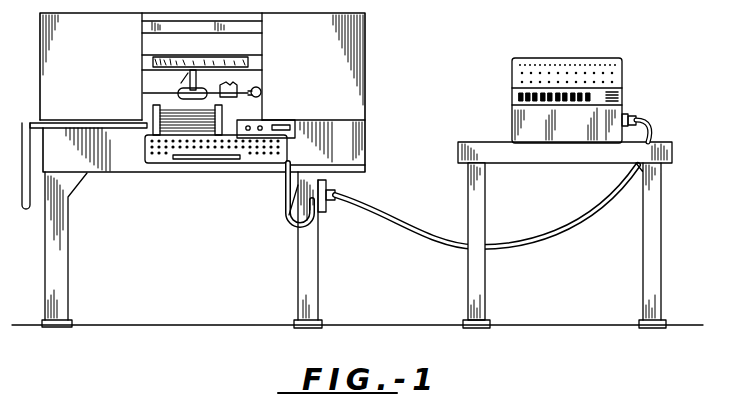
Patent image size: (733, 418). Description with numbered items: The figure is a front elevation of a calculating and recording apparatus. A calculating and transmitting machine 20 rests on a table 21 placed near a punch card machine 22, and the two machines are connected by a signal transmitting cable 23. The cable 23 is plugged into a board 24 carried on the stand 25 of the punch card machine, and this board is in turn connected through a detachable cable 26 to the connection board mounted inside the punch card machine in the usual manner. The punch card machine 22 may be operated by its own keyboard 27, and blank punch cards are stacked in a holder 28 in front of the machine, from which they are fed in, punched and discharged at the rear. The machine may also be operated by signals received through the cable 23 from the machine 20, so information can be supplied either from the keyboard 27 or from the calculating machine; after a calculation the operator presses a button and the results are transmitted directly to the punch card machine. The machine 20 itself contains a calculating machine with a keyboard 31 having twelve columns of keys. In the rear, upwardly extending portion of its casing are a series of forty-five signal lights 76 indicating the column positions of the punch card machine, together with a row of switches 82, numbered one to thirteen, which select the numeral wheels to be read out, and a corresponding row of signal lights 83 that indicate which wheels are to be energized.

The calculating and transmitting machine 20 is at (662, 115).
The table 21 is at (552, 157).
The punch card machine 22 is at (397, 101).
The signal transmitting cable 23 is at (407, 222).
The board 24 is at (321, 204).
The stand 25 is at (305, 240).
The detachable cable 26 is at (286, 205).
The keyboard 27 is at (244, 167).
The holder 28 is at (165, 118).
The keyboard 31 is at (518, 98).
The signal lights 76 is at (589, 63).
The row of switches 82 is at (615, 82).
The row of signal lights 83 is at (612, 73).